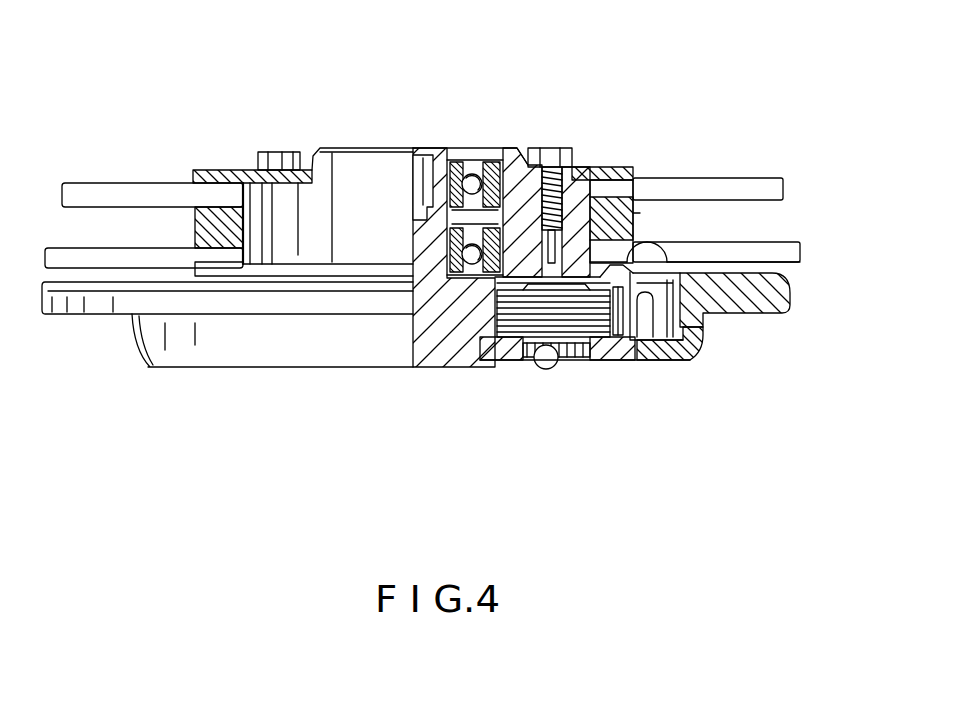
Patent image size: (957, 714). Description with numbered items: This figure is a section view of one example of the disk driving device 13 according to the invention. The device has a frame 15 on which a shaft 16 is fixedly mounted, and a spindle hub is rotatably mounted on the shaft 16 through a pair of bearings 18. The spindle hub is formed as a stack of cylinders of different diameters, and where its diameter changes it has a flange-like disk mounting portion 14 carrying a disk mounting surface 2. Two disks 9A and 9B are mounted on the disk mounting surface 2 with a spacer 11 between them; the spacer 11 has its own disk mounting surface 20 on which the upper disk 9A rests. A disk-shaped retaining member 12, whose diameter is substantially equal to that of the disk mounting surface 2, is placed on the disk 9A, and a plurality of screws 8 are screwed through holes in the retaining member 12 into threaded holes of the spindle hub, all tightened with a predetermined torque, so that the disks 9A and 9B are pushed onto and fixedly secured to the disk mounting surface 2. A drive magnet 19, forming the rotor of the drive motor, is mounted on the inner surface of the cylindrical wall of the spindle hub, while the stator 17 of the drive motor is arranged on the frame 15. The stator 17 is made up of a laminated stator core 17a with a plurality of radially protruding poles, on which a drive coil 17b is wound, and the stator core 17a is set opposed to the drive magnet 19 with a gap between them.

The disk mounting surface 2 is at (733, 313).
The screws 8 is at (568, 163).
The disk 9A is at (737, 188).
The disk 9B is at (793, 242).
The spacer 11 is at (640, 213).
The retaining member 12 is at (620, 167).
The disk driving device 13 is at (728, 88).
The disk mounting portion 14 is at (548, 368).
The frame 15 is at (480, 367).
The shaft 16 is at (423, 367).
The stator 17 is at (523, 360).
The stator core 17a is at (608, 358).
The drive coil 17b is at (580, 360).
The bearings 18 is at (470, 244).
The drive magnet 19 is at (632, 357).
The disk mounting surface 20 is at (640, 205).